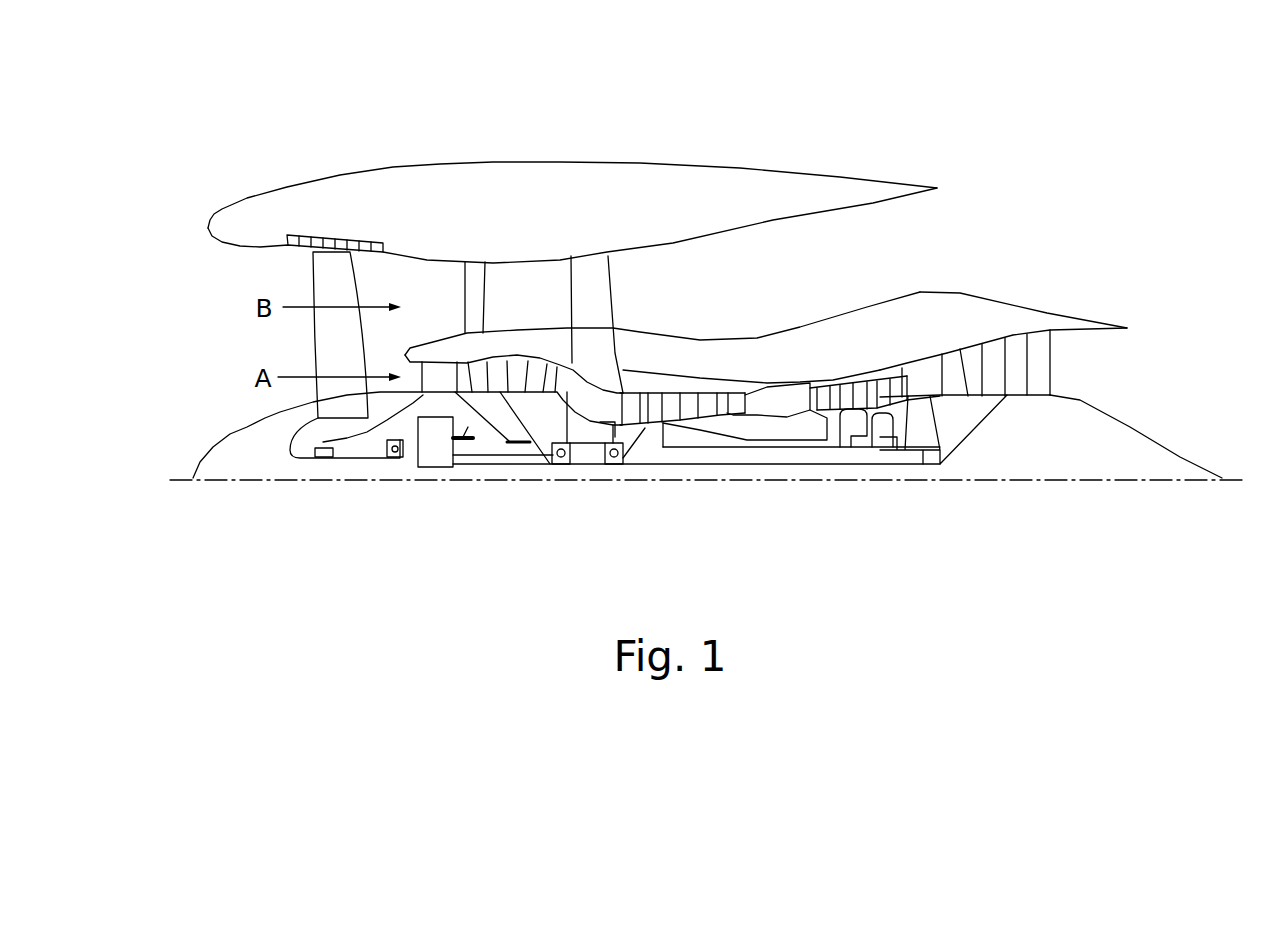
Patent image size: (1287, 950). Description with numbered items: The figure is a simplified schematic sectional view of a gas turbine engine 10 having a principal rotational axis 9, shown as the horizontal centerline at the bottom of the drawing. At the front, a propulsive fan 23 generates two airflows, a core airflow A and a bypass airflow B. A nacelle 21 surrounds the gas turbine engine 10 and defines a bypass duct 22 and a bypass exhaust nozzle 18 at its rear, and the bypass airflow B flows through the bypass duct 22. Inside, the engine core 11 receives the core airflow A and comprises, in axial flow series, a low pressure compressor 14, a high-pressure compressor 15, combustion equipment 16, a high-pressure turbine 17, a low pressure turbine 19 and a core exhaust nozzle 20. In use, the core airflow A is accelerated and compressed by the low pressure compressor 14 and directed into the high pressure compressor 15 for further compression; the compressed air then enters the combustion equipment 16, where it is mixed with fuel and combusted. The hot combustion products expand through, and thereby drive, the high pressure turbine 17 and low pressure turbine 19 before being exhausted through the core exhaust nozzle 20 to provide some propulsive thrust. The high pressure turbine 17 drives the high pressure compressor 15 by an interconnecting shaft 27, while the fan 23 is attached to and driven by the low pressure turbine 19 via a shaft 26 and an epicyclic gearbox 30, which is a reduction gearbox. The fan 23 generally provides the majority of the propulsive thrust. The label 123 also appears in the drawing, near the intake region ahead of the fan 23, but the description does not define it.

The principal rotational axis 9 is at (1087, 483).
The gas turbine engine 10 is at (282, 183).
The core 11 is at (797, 360).
The low pressure compressor 14 is at (518, 373).
The high-pressure compressor 15 is at (693, 407).
The combustion equipment 16 is at (768, 440).
The high-pressure turbine 17 is at (857, 387).
The bypass exhaust nozzle 18 is at (1073, 183).
The low pressure turbine 19 is at (1022, 378).
The core exhaust nozzle 20 is at (1138, 377).
The nacelle 21 is at (586, 182).
The bypass duct 22 is at (864, 241).
The propulsive fan 23 is at (322, 355).
The shaft 26 is at (648, 467).
The interconnecting shaft 27 is at (730, 450).
The epicyclic gearbox 30 is at (435, 453).
The air intake 123 is at (218, 270).